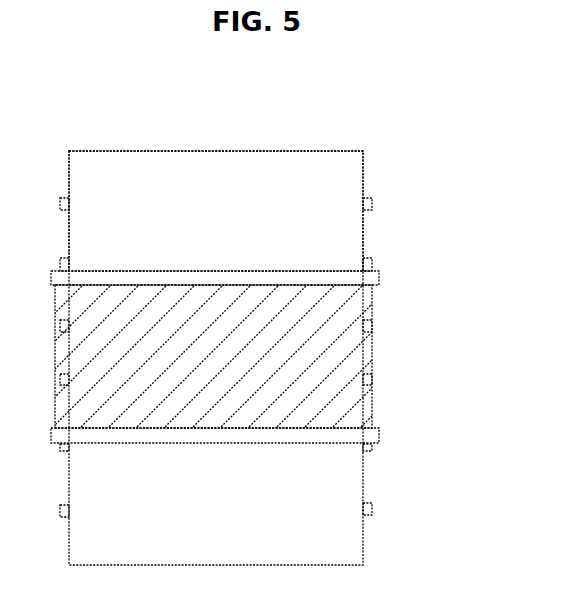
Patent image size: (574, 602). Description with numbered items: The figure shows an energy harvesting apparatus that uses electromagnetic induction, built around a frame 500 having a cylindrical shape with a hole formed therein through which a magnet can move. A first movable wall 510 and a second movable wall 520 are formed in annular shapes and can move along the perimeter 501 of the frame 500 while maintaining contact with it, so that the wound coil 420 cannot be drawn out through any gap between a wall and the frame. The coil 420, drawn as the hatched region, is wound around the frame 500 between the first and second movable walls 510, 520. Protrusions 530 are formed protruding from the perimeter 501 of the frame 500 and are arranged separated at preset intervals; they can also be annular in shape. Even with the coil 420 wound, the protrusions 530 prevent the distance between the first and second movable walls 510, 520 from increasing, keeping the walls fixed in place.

The frame 500 is at (303, 151).
The perimeter 501 is at (112, 174).
The protrusions 530 is at (366, 203).
The first movable wall 510 is at (380, 278).
The coil 420 is at (372, 356).
The second movable wall 520 is at (380, 434).